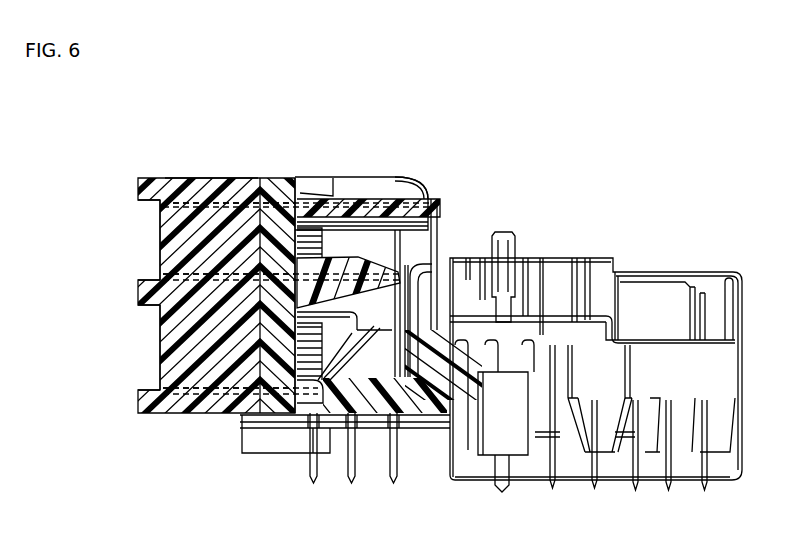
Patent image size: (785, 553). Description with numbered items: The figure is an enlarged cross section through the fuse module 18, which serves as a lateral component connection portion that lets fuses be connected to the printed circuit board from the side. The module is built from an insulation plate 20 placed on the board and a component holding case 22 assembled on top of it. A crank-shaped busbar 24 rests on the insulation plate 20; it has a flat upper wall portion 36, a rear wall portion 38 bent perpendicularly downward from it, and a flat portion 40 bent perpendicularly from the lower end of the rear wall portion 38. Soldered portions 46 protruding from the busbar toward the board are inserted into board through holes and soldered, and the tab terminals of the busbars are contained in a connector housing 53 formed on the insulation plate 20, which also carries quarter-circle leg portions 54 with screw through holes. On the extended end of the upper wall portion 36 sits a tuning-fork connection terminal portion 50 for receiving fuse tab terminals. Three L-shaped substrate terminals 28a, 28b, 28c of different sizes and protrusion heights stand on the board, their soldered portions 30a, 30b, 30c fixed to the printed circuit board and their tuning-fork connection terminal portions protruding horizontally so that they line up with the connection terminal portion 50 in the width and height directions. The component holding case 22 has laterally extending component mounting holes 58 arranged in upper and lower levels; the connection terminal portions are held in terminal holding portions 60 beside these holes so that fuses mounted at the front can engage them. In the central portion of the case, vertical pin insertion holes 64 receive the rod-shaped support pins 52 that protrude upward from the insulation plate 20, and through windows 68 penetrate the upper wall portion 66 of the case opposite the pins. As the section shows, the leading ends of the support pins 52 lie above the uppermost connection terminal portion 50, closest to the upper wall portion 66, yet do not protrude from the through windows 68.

The fuse module 18 is at (471, 82).
The insulation plate 20 is at (542, 182).
The component holding case 22 is at (218, 124).
The busbar 24 is at (380, 200).
The upper wall portion 36 is at (411, 188).
The rear wall portion 38 is at (438, 246).
The flat portion 40 is at (532, 320).
The soldered portions 46 is at (551, 458).
The connection terminal portion 50 is at (208, 180).
The support pins 52 is at (270, 256).
The connector housing 53 is at (523, 262).
The leg portions 54 is at (263, 442).
The component mounting holes 58 is at (139, 198).
The terminal holding portions 60 is at (433, 289).
The pin insertion holes 64 is at (268, 362).
The upper wall portion 66 is at (259, 180).
The through windows 68 is at (279, 186).
The substrate terminal 28a is at (192, 272).
The substrate terminal 28b is at (193, 316).
The substrate terminal 28c is at (192, 394).
The soldered portion 30a is at (391, 459).
The soldered portion 30b is at (349, 459).
The soldered portion 30c is at (311, 459).